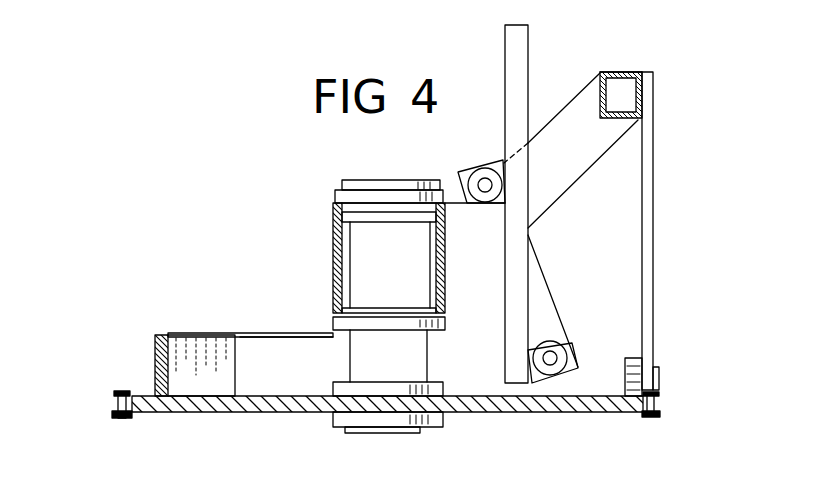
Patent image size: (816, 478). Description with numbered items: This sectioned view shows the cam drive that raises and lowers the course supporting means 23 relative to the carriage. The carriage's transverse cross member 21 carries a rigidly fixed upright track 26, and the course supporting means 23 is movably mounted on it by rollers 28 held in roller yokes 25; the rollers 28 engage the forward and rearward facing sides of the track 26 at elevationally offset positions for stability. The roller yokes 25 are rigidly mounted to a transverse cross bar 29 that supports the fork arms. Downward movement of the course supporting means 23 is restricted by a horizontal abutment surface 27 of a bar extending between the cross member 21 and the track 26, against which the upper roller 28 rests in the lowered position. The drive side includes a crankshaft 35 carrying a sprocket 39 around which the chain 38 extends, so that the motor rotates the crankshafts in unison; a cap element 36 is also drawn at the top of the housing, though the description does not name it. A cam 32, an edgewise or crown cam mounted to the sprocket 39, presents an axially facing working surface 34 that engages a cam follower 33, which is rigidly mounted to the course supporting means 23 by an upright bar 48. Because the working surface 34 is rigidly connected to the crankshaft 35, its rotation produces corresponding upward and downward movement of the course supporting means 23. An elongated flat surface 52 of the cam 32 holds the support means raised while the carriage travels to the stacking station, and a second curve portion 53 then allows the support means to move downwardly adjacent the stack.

The transverse cross member 21 is at (333, 245).
The course supporting means 23 is at (609, 60).
The roller yoke 25 is at (540, 292).
The upright track 26 is at (515, 59).
The horizontal abutment surface 27 is at (452, 204).
The roller 28 is at (480, 173).
The transverse cross bar 29 is at (644, 96).
The cam 32 is at (233, 334).
The cam follower 33 is at (645, 357).
The working surface 34 is at (290, 338).
The crankshaft 35 is at (286, 351).
The cap 36 is at (335, 197).
The chain 38 is at (118, 401).
The sprocket 39 is at (283, 396).
The upright bar 48 is at (652, 176).
The elongated flat surface 52 is at (157, 334).
The second curve portion 53 is at (465, 397).